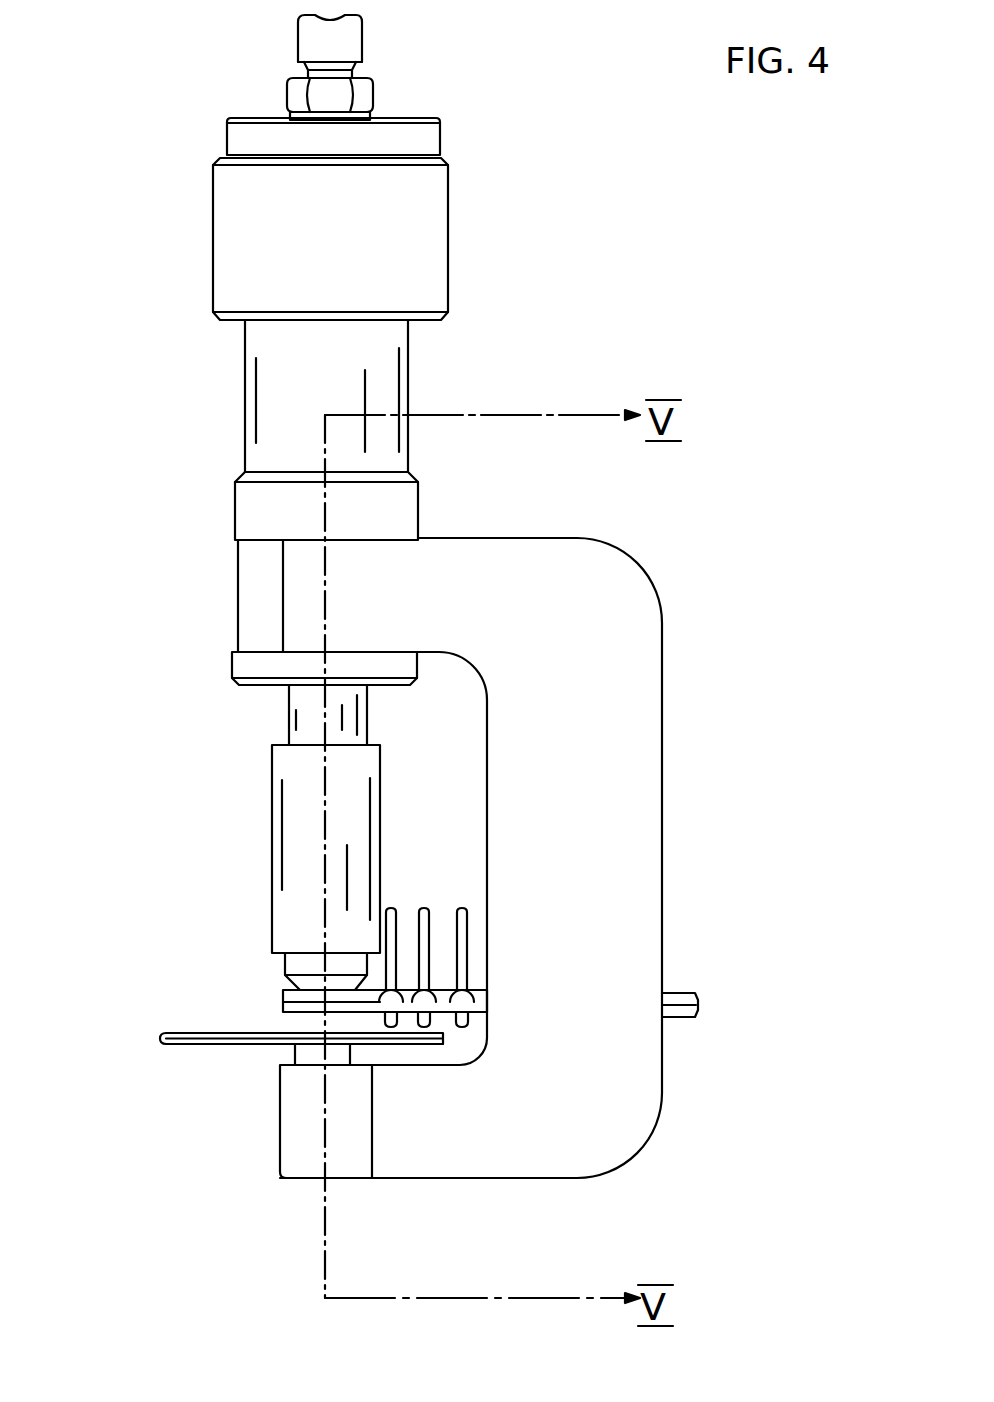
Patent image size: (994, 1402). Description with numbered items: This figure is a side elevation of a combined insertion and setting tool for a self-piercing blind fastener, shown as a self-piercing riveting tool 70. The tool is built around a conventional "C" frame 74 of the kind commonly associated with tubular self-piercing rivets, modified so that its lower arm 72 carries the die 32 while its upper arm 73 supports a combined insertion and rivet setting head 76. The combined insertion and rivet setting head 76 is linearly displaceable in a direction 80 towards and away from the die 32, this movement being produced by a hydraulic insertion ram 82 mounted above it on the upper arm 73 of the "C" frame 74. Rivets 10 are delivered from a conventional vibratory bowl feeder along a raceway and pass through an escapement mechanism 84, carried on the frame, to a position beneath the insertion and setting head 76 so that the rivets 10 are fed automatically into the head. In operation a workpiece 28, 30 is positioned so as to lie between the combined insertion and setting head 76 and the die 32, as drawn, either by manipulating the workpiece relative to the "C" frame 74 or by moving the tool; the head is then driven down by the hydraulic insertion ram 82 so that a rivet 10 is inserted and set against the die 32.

The self-piercing riveting tool 70 is at (578, 252).
The hydraulic insertion ram 82 is at (380, 368).
The upper arm 73 is at (437, 562).
The C frame 74 is at (627, 560).
The lower arm 72 is at (453, 1153).
The combined insertion and rivet setting head 76 is at (300, 873).
The direction 80 is at (150, 760).
The rivets 10 is at (470, 942).
The escapement mechanism 84 is at (683, 993).
The workpiece 28 is at (176, 1033).
The workpiece 30 is at (197, 1045).
The die 32 is at (300, 1053).